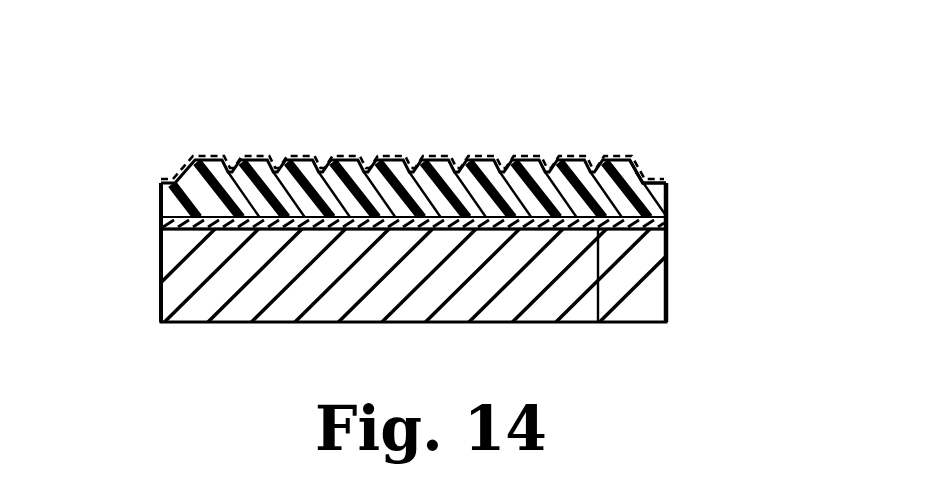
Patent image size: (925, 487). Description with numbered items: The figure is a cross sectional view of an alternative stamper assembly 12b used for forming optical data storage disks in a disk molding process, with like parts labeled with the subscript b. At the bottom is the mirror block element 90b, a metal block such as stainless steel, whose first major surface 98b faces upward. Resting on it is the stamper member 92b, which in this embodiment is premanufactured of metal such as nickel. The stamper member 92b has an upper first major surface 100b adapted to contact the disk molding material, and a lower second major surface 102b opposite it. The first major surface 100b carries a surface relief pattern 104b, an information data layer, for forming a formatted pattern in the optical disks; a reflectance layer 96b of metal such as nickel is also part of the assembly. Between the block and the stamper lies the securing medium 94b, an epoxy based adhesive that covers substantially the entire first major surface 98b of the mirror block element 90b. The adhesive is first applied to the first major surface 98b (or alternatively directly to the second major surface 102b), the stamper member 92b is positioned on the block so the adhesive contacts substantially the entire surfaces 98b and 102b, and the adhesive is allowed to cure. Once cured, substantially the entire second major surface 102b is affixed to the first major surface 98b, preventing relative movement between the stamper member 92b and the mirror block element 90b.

The alternative stamper assembly 12b is at (469, 213).
The mirror block element 90b is at (643, 296).
The stamper member 92b is at (395, 148).
The securing medium 94b is at (666, 226).
The reflectance layer 96b is at (342, 157).
The first major surface 98b is at (172, 221).
The first major surface 100b is at (637, 168).
The second major surface 102b is at (598, 322).
The surface relief pattern 104b is at (492, 154).